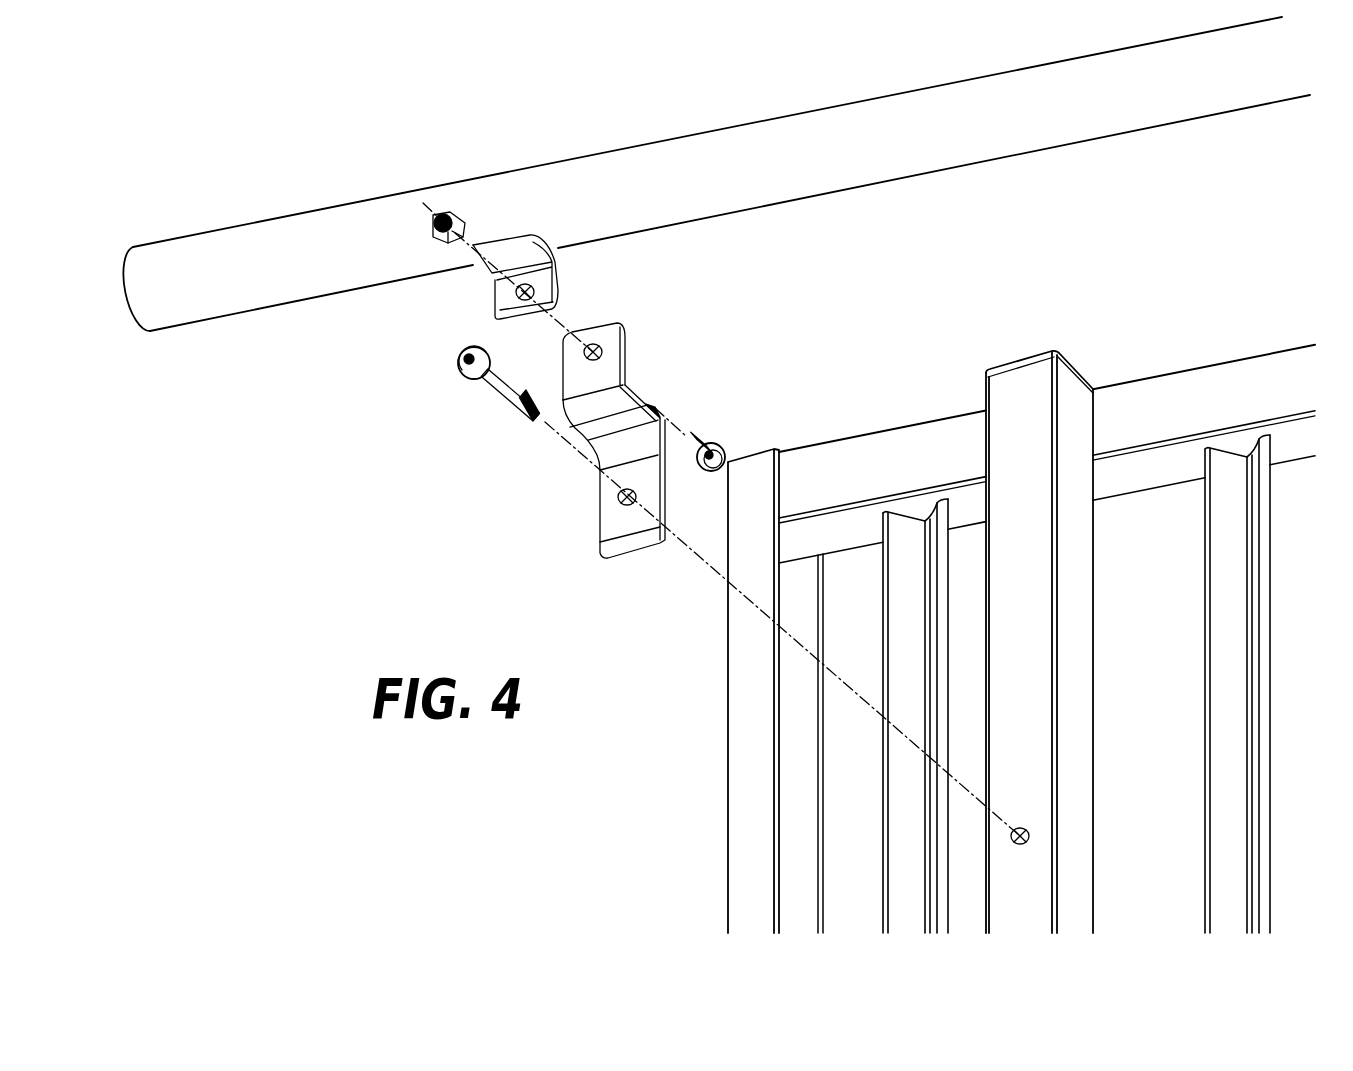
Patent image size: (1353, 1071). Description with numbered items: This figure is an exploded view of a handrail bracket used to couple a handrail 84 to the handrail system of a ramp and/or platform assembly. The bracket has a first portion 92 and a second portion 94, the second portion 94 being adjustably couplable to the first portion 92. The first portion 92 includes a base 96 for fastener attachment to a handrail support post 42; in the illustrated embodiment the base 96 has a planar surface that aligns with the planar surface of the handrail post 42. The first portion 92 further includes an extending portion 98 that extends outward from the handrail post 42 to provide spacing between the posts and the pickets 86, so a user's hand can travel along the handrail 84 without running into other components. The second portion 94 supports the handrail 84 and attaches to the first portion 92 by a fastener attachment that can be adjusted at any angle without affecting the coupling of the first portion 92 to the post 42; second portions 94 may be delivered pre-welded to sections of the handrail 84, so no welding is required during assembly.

The handrail support post 42 is at (1068, 405).
The handrail 84 is at (655, 161).
The pickets 86 is at (887, 822).
The first portion 92 is at (630, 437).
The second portion 94 is at (553, 240).
The base 96 is at (601, 499).
The extending portion 98 is at (633, 351).